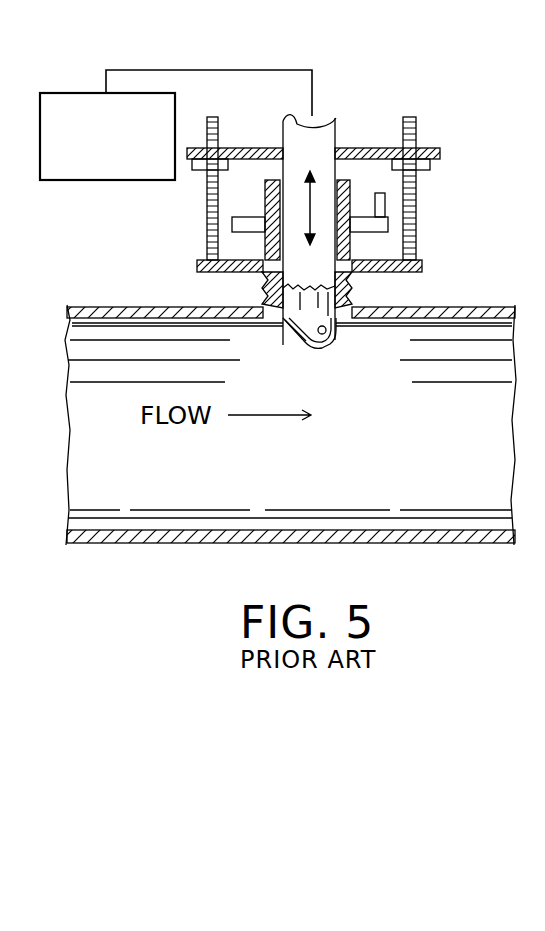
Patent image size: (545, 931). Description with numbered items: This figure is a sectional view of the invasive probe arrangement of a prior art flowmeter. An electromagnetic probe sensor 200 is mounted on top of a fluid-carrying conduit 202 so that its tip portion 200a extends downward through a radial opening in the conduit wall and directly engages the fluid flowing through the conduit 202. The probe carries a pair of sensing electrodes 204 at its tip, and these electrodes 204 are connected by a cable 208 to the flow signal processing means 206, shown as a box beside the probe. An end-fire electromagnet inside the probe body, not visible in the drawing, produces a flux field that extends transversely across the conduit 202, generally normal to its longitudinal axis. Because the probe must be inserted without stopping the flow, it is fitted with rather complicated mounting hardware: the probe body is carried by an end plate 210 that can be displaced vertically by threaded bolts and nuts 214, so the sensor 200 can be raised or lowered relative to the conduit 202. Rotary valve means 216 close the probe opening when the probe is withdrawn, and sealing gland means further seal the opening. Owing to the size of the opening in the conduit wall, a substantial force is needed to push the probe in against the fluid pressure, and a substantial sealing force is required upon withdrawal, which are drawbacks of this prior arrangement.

The electromagnetic probe sensor 200 is at (336, 117).
The tip portion 200a is at (333, 348).
The conduit 202 is at (490, 305).
The sensing electrodes 204 is at (308, 346).
The flow signal processing means 206 is at (86, 182).
The cable 208 is at (118, 68).
The end plate 210 is at (362, 148).
The nuts 214 is at (425, 171).
The rotary valve means 216 is at (362, 232).